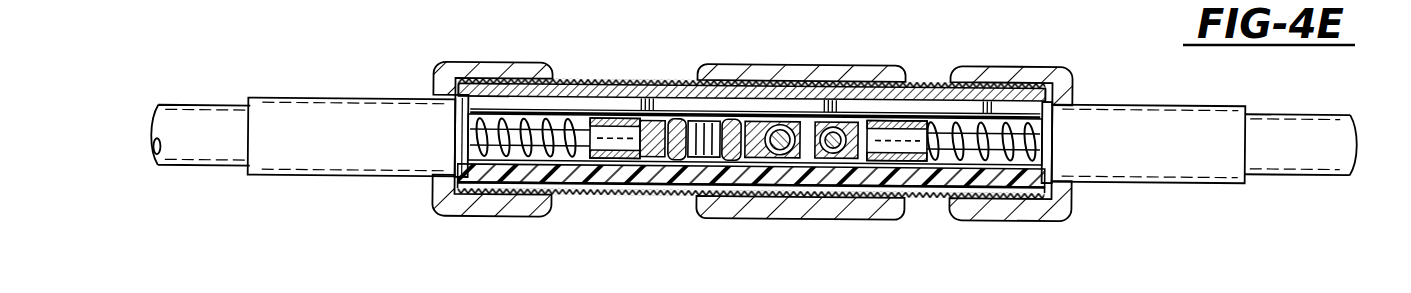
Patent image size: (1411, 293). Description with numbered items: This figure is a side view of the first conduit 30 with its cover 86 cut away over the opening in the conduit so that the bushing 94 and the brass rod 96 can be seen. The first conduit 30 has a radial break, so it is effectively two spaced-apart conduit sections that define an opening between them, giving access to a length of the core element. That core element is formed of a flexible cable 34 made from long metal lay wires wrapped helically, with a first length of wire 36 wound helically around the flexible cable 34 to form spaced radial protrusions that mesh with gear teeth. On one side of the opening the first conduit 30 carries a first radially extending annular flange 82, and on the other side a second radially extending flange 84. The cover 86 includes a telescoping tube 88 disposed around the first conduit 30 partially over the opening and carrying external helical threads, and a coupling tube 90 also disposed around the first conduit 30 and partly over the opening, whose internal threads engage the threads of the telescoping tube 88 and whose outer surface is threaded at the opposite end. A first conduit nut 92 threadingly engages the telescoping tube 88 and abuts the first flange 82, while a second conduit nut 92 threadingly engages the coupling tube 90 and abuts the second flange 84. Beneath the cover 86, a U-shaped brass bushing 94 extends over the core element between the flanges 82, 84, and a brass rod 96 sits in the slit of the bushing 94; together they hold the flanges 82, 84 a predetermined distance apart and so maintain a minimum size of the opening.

The first conduit 30 is at (158, 152).
The flexible cable 34 is at (612, 165).
The first length of wire 36 is at (494, 166).
The first radially extending annular flange 82 is at (460, 123).
The second radially extending flange 84 is at (1048, 133).
The cover 86 is at (797, 66).
The telescoping tube 88 is at (645, 97).
The coupling tube 90 is at (890, 68).
The conduit nut 92 is at (467, 63).
The bushing 94 is at (640, 173).
The brass rod 96 is at (583, 105).